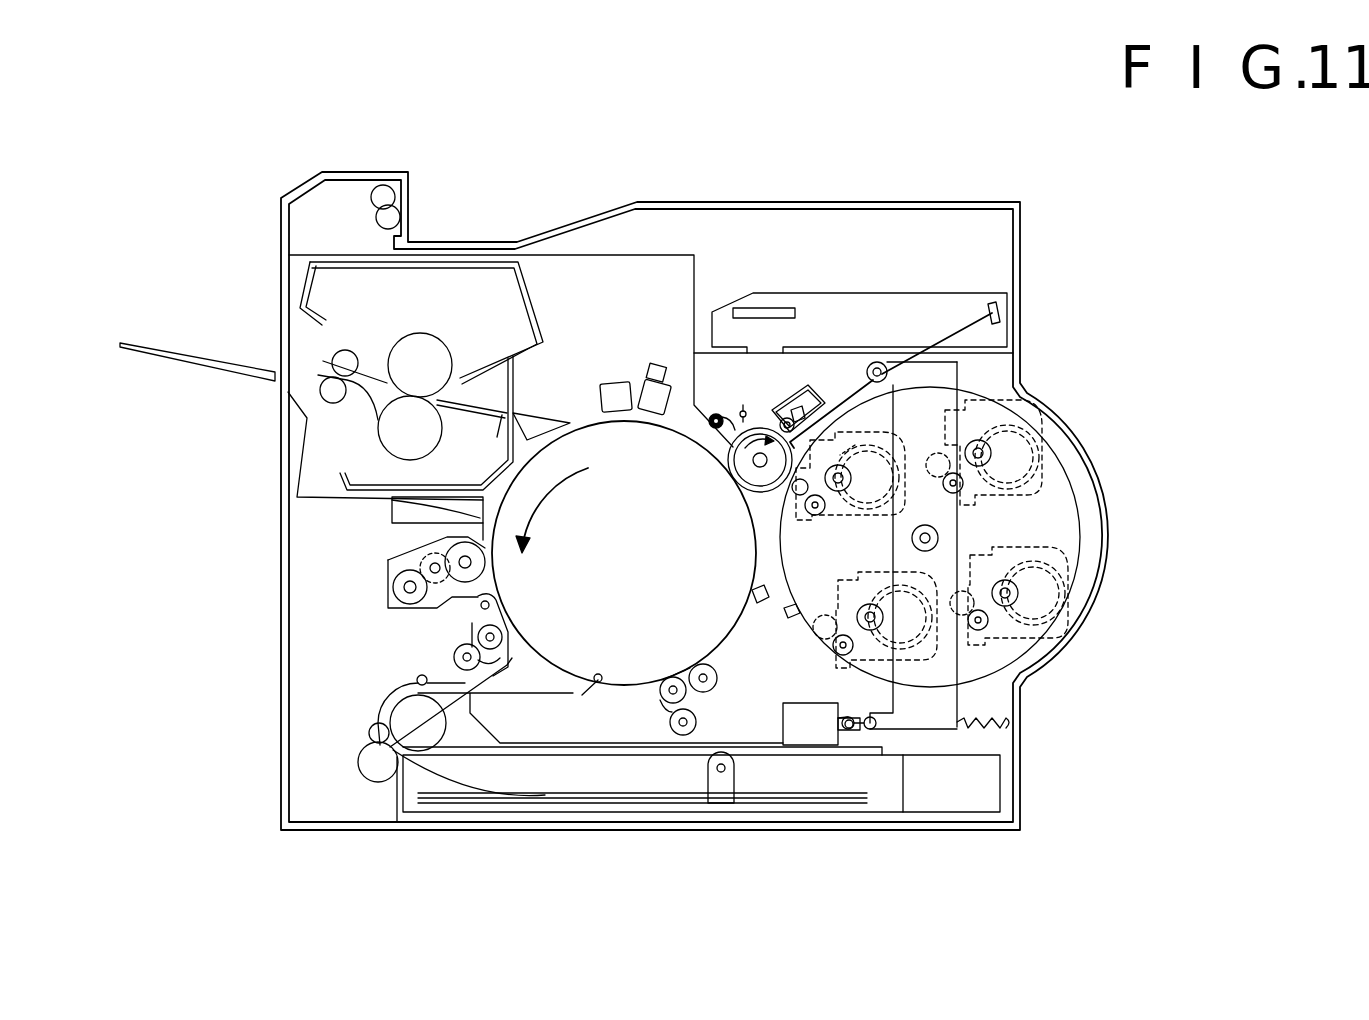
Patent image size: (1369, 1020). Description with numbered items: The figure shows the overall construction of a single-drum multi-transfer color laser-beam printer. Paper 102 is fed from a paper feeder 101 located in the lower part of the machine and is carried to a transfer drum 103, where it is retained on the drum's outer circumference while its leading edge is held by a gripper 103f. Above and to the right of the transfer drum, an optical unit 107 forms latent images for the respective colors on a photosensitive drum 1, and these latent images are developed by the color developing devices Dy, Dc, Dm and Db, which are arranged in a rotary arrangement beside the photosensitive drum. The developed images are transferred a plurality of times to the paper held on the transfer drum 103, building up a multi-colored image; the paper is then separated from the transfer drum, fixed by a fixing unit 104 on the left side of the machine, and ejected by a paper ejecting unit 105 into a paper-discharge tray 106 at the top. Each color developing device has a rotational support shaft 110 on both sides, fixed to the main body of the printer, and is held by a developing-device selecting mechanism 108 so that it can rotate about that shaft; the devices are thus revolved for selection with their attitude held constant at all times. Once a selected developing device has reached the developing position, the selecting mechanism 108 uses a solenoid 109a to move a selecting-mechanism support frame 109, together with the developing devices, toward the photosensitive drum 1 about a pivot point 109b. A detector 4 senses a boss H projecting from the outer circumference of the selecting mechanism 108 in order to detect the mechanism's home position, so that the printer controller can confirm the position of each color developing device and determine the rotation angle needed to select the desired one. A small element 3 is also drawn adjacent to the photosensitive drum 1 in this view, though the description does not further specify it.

The photosensitive drum 1 is at (740, 476).
The charger 3 is at (741, 404).
The detector 4 is at (755, 592).
The paper feeder 101 is at (555, 812).
The paper 102 is at (540, 693).
The transfer drum 103 is at (710, 630).
The gripper 103f is at (600, 674).
The fixing unit 104 is at (317, 470).
The paper ejecting unit 105 is at (392, 195).
The paper-discharge tray 106 is at (480, 243).
The optical unit 107 is at (900, 298).
The developing-device selecting mechanism 108 is at (1052, 478).
The selecting-mechanism support frame 109 is at (938, 704).
The solenoid 109a is at (790, 708).
The pivot point 109b is at (877, 362).
The rotational support shaft 110 is at (938, 533).
The yellow developing device Dy is at (862, 461).
The cyan developing device Dc is at (1045, 395).
The black developing device Db is at (823, 585).
The magenta developing device Dm is at (1080, 598).
The boss H is at (798, 610).